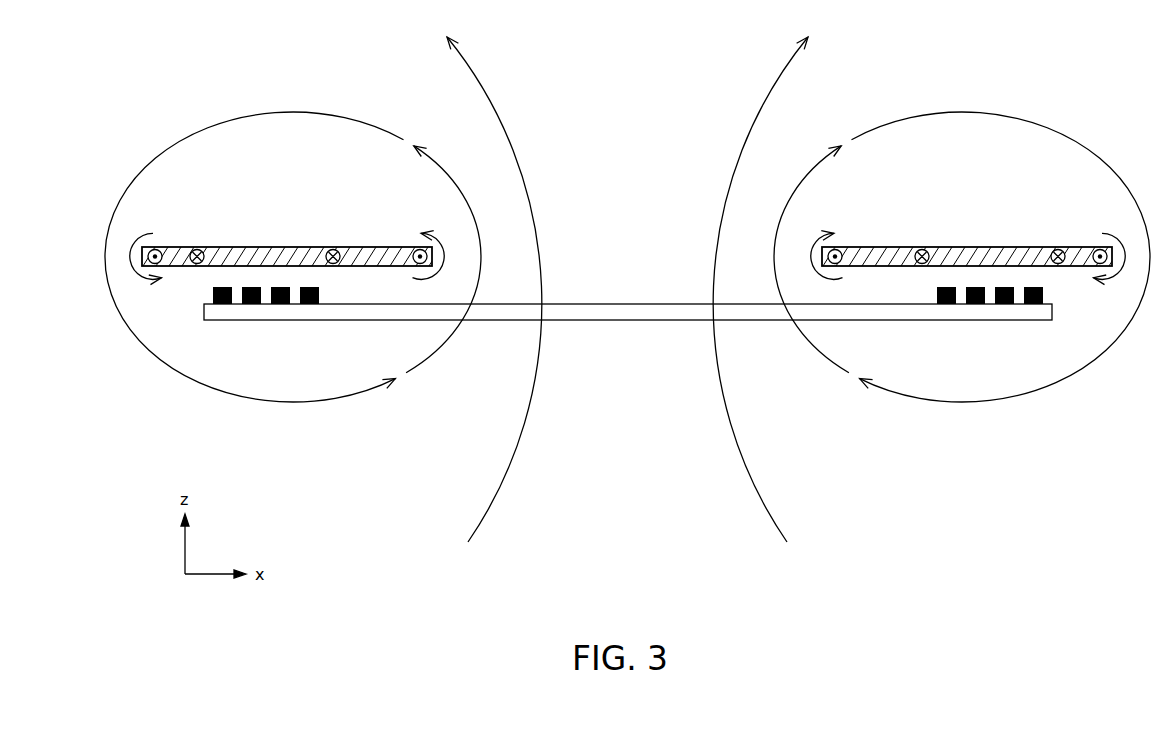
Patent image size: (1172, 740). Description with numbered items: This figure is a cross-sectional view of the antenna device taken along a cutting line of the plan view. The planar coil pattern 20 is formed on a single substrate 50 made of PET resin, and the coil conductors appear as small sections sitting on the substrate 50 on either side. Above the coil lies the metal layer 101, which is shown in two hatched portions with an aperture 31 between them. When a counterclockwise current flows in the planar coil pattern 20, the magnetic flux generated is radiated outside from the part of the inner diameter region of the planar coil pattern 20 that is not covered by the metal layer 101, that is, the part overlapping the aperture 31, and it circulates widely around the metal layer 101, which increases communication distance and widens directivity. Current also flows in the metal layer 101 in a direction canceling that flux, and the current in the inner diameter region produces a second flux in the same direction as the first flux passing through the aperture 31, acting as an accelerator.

The metal layer 101 is at (277, 247).
The planar coil pattern 20 is at (1044, 292).
The substrate 50 is at (911, 322).
The aperture 31 is at (607, 241).